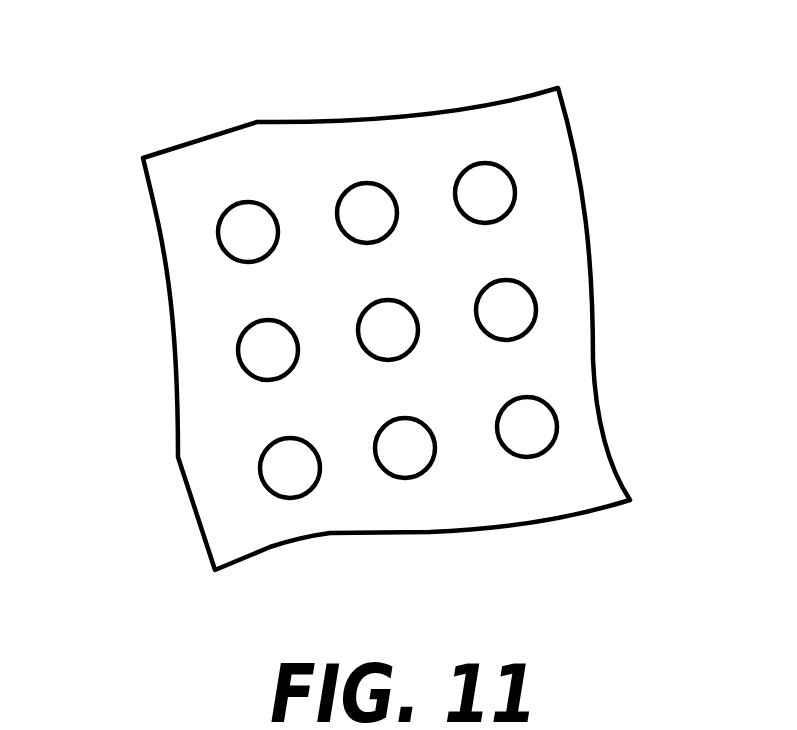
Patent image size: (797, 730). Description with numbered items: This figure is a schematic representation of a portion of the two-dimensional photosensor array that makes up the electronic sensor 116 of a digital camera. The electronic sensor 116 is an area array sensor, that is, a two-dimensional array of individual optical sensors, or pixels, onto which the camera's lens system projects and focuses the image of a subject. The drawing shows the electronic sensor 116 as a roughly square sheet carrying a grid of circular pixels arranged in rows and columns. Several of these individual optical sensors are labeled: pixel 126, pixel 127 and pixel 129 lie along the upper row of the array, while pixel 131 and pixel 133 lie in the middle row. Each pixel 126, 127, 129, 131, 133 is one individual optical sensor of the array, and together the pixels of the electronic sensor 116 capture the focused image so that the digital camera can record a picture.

The electronic sensor 116 is at (587, 200).
The pixel 126 is at (238, 195).
The pixel 127 is at (362, 182).
The pixel 129 is at (470, 163).
The pixel 131 is at (232, 348).
The pixel 133 is at (417, 340).